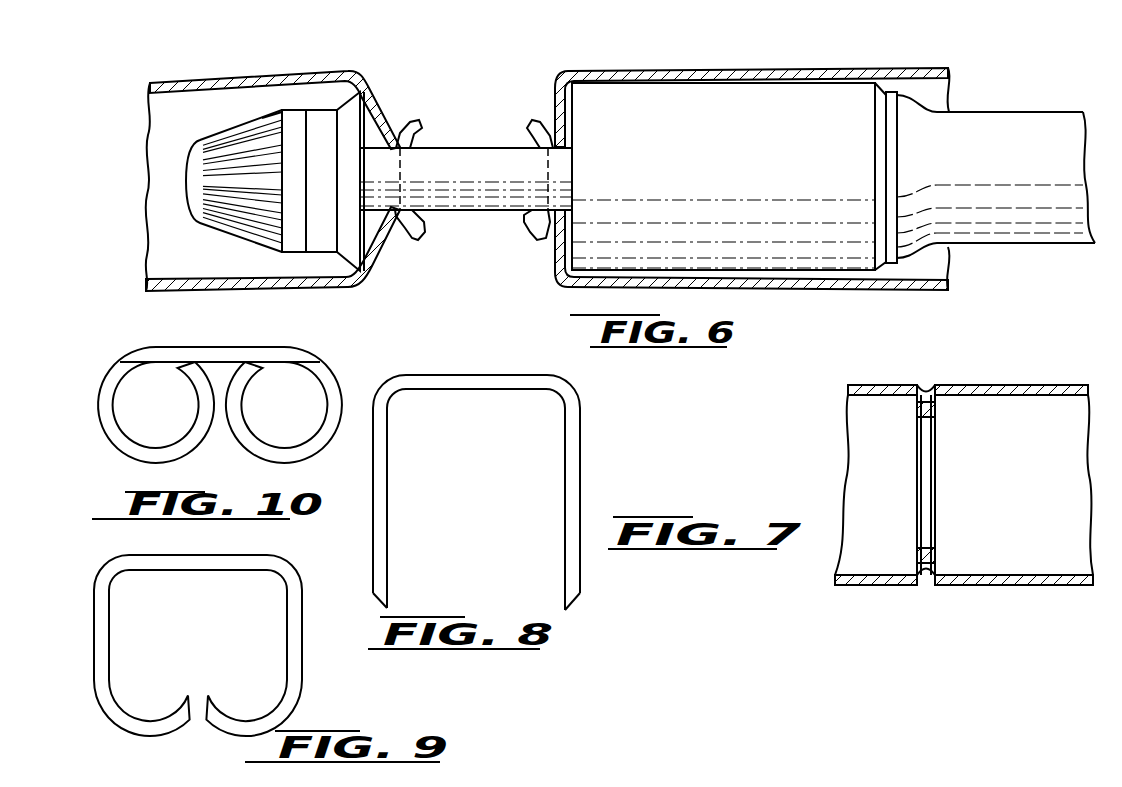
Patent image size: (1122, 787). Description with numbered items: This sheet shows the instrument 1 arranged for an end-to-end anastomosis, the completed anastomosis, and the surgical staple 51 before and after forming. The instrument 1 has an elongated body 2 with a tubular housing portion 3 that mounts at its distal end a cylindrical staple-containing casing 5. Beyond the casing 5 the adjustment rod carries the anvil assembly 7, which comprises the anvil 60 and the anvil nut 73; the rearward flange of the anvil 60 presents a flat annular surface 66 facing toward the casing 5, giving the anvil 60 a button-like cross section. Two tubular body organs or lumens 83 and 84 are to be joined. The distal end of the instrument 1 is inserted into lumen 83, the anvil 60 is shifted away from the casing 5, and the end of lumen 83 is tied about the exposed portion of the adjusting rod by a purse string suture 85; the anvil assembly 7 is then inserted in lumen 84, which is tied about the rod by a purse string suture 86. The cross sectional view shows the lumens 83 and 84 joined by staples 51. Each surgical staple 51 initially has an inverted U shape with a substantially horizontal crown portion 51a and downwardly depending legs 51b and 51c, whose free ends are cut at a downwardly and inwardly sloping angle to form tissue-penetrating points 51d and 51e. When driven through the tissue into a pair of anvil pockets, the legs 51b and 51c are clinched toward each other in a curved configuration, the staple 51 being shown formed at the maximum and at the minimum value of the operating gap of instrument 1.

In FIG. 6, the instrument 1 is at (1000, 110).
In FIG. 6, the elongated body 2 is at (961, 112).
In FIG. 6, the tubular housing portion 3 is at (1033, 120).
In FIG. 6, the staple-containing casing 5 is at (753, 102).
In FIG. 6, the anvil assembly 7 is at (272, 112).
In FIG. 6, the anvil 60 is at (327, 108).
In FIG. 6, the flat annular surface 66 is at (364, 120).
In FIG. 6, the anvil nut 73 is at (237, 123).
In FIG. 6, the lumen 83 is at (662, 73).
In FIG. 7, the lumen 83 is at (1000, 385).
In FIG. 6, the lumen 84 is at (172, 83).
In FIG. 7, the lumen 84 is at (878, 385).
In FIG. 6, the purse string suture 85 is at (548, 133).
In FIG. 6, the purse string suture 86 is at (400, 133).
In FIG. 10, the surgical staple 51 is at (209, 386).
In FIG. 9, the surgical staple 51 is at (194, 630).
In FIG. 8, the surgical staple 51 is at (482, 480).
In FIG. 7, the surgical staple 51 is at (937, 403).
In FIG. 10, the crown portion 51a is at (221, 346).
In FIG. 9, the crown portion 51a is at (190, 562).
In FIG. 8, the crown portion 51a is at (470, 375).
In FIG. 10, the leg 51b is at (100, 400).
In FIG. 9, the leg 51b is at (94, 588).
In FIG. 8, the leg 51b is at (373, 488).
In FIG. 10, the leg 51c is at (323, 372).
In FIG. 9, the leg 51c is at (295, 645).
In FIG. 8, the leg 51c is at (580, 463).
In FIG. 10, the tissue-penetrating point 51d is at (171, 372).
In FIG. 9, the tissue-penetrating point 51d is at (187, 697).
In FIG. 8, the tissue-penetrating point 51d is at (390, 609).
In FIG. 10, the tissue-penetrating point 51e is at (267, 372).
In FIG. 9, the tissue-penetrating point 51e is at (207, 697).
In FIG. 8, the tissue-penetrating point 51e is at (569, 610).